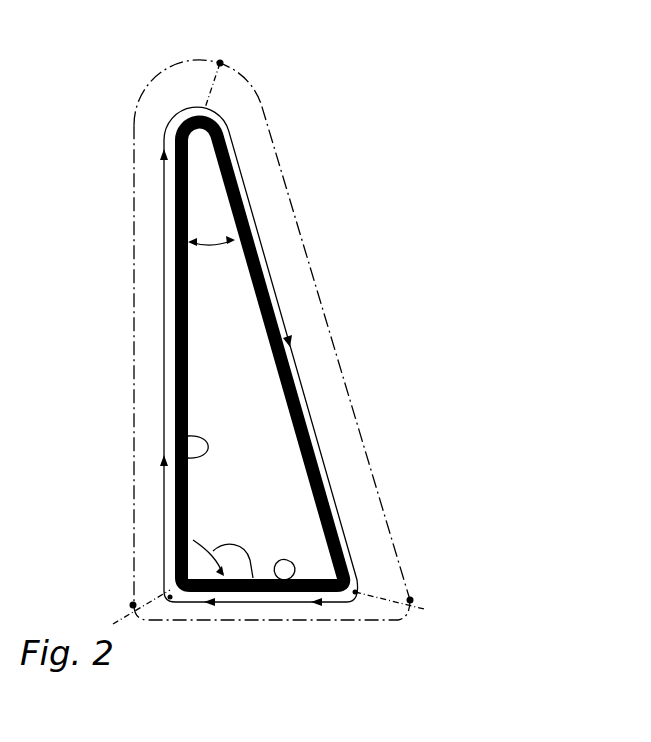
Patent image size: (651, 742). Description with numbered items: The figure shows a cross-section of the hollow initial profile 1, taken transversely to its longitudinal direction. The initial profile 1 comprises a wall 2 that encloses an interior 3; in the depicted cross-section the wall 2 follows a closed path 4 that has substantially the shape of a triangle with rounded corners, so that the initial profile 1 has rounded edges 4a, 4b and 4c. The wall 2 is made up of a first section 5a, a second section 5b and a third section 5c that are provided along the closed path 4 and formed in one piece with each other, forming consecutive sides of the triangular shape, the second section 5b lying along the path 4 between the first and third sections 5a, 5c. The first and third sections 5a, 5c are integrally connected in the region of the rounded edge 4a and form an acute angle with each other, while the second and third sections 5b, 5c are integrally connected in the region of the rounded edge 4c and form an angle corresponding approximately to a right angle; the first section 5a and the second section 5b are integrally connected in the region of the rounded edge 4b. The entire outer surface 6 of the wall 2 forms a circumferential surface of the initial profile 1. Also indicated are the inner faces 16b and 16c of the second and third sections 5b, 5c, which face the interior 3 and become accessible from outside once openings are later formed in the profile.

The initial profile 1 is at (442, 116).
The wall 2 is at (232, 163).
The interior 3 is at (245, 420).
The closed path 4 is at (305, 393).
The rounded edge 4a is at (204, 108).
The rounded edge 4b is at (410, 603).
The rounded edge 4c is at (170, 597).
The first section 5a is at (292, 205).
The second section 5b is at (322, 620).
The third section 5c is at (135, 212).
The outer surface 6 is at (327, 468).
The inner face 16b is at (282, 587).
The inner face 16c is at (177, 448).